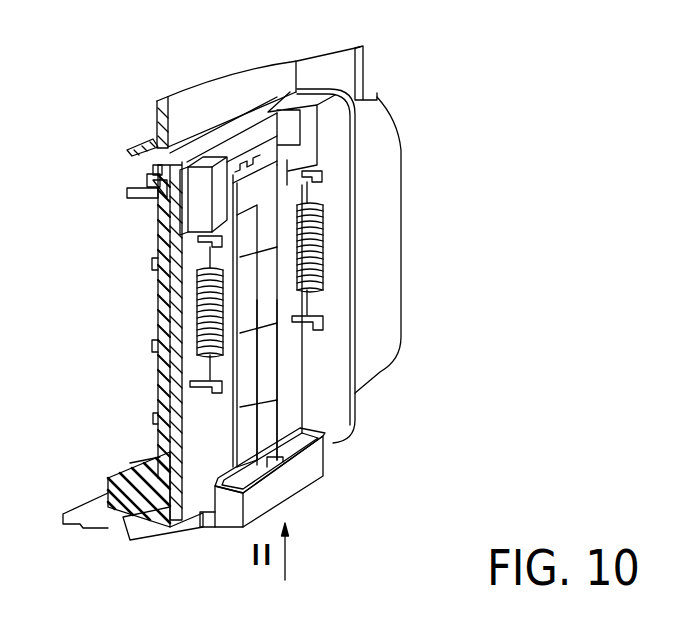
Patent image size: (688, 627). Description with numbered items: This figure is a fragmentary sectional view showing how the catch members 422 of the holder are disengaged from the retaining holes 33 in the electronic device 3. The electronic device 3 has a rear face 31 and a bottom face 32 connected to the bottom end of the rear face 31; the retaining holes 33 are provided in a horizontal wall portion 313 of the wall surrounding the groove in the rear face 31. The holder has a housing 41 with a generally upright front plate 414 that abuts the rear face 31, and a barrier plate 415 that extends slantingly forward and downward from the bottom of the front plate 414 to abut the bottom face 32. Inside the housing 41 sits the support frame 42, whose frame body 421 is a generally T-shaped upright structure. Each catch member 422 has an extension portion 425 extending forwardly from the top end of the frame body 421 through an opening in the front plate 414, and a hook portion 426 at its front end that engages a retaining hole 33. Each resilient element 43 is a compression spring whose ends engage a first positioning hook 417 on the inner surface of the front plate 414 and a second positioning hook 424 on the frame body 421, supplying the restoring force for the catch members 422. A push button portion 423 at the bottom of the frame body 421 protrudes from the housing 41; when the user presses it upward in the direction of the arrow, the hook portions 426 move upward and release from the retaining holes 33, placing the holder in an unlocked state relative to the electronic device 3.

The electronic device 3 is at (328, 72).
The housing 41 is at (369, 162).
The support frame 42 is at (296, 365).
The frame body 421 is at (267, 423).
The catch member 422 is at (150, 154).
The push button portion 423 is at (318, 480).
The second positioning hook 424 is at (207, 243).
The extension portion 425 is at (198, 165).
The hook portion 426 is at (155, 168).
The rear face 31 is at (170, 224).
The horizontal wall portion 313 is at (127, 190).
The retaining hole 33 is at (147, 178).
The front plate 414 is at (168, 303).
The barrier plate 415 is at (147, 532).
The first positioning hook 417 is at (190, 382).
The resilient element 43 is at (203, 327).
The bottom face 32 is at (127, 500).